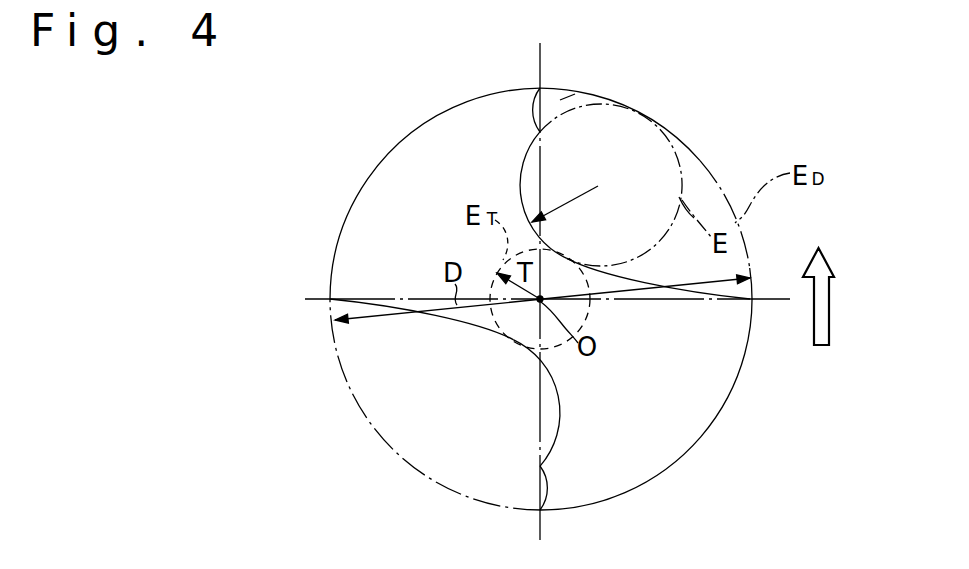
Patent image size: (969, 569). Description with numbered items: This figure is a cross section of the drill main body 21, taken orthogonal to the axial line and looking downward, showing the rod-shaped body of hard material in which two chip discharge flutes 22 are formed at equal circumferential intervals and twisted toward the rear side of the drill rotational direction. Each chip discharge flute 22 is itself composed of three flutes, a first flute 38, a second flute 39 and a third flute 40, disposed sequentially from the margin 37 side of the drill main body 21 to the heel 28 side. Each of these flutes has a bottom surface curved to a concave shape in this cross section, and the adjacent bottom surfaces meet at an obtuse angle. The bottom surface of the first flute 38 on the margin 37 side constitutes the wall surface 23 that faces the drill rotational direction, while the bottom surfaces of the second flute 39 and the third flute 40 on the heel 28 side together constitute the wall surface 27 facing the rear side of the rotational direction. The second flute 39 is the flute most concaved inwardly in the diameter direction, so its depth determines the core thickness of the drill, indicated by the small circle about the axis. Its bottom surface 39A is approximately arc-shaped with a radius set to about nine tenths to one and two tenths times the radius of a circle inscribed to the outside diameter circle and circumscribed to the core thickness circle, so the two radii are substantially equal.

The drill main body 21 is at (390, 176).
The chip discharge flute 22 is at (548, 299).
The wall surface 23 is at (693, 293).
The wall surface 27 is at (528, 167).
The heel 28 is at (540, 87).
The margin 37 is at (332, 298).
The first flute 38 is at (703, 213).
The second flute 39 is at (557, 168).
The bottom surface of the second flute 39A is at (584, 205).
The third flute 40 is at (567, 92).